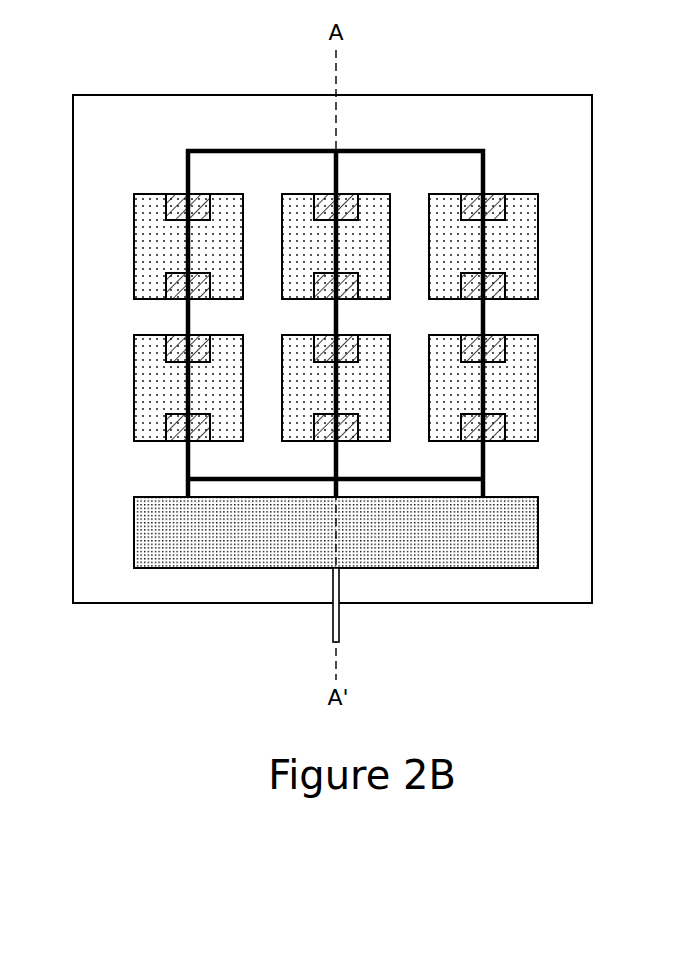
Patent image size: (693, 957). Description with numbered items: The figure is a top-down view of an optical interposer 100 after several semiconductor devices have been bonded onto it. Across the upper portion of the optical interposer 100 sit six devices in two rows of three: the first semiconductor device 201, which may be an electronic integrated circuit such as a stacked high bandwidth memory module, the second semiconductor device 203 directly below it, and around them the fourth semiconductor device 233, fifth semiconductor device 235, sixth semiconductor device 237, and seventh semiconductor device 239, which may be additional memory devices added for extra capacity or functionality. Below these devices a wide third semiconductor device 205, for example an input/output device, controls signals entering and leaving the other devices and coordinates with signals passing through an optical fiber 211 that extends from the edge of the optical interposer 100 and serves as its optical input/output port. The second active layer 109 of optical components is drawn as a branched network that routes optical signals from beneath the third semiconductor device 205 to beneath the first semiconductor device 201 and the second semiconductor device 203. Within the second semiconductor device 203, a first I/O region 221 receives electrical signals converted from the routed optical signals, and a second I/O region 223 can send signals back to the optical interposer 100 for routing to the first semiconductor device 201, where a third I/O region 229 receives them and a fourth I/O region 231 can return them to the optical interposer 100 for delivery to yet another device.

The optical interposer 100 is at (568, 583).
The second active layer 109 is at (488, 478).
The first semiconductor device 201 is at (368, 200).
The second semiconductor device 203 is at (373, 432).
The third semiconductor device 205 is at (540, 532).
The optical fiber 211 is at (340, 623).
The first I/O region 221 is at (323, 434).
The second I/O region 223 is at (323, 340).
The third I/O region 229 is at (350, 290).
The fourth I/O region 231 is at (323, 200).
The fourth semiconductor device 233 is at (517, 432).
The fifth semiconductor device 235 is at (517, 200).
The sixth semiconductor device 237 is at (152, 432).
The seventh semiconductor device 239 is at (152, 200).